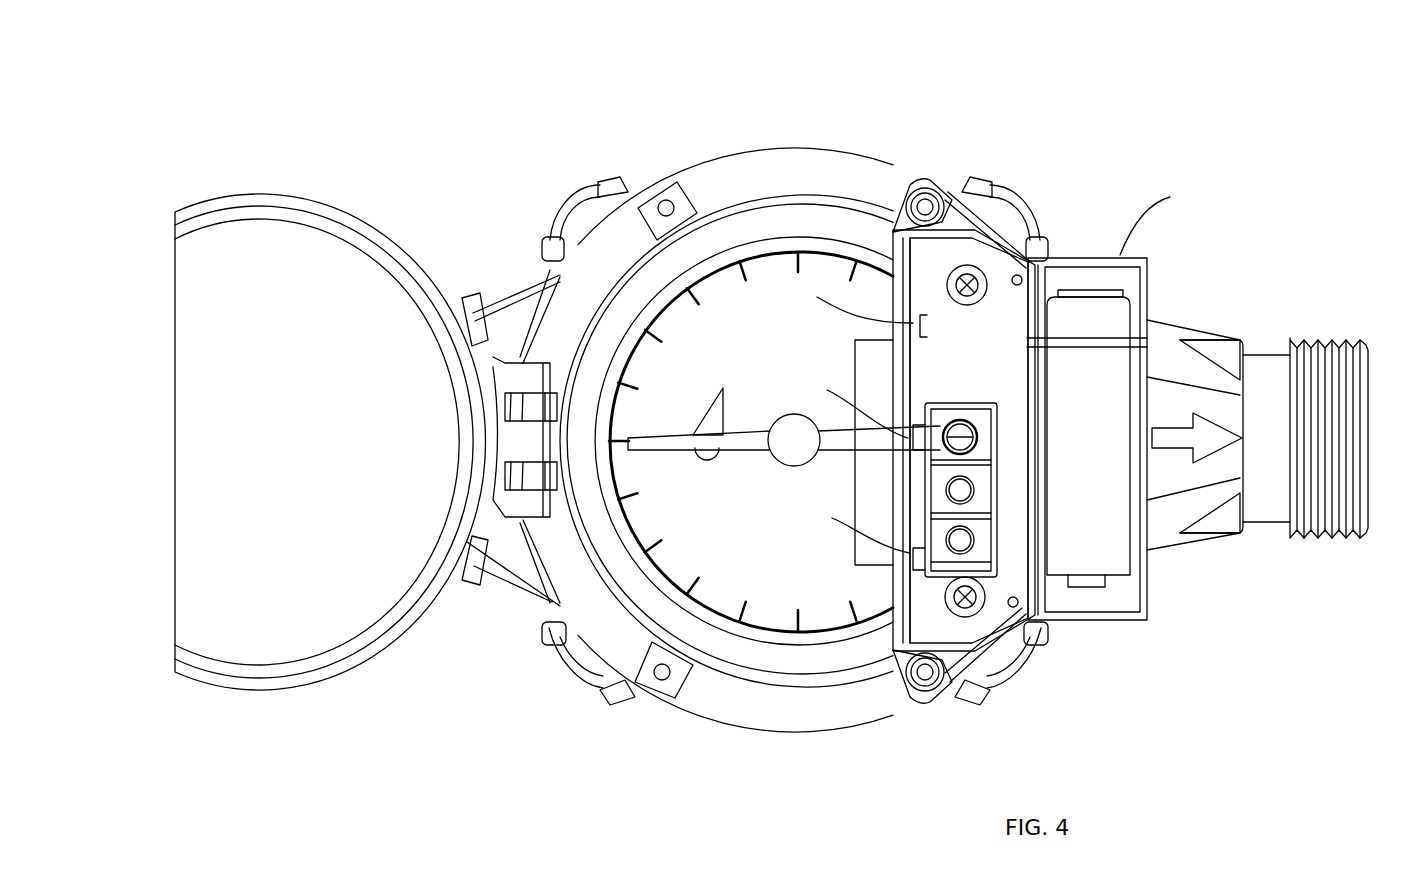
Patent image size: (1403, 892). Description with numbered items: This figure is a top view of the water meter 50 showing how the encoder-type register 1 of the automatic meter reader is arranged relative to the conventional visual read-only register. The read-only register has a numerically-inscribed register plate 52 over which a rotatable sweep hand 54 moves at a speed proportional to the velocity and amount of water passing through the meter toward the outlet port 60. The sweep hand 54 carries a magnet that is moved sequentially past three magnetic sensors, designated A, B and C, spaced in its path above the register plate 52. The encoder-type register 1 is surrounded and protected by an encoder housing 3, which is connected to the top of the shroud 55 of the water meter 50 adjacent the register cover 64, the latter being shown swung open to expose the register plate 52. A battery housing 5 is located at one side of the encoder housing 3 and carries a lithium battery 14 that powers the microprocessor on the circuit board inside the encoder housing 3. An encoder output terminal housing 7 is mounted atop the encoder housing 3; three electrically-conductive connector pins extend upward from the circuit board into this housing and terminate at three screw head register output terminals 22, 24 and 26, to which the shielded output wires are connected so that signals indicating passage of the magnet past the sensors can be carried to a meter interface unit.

The encoder-type register 1 is at (965, 386).
The encoder housing 3 is at (887, 590).
The battery housing 5 is at (1119, 380).
The encoder output terminal housing 7 is at (913, 470).
The battery 14 is at (1088, 310).
The register output terminal 22 is at (978, 437).
The register output terminal 24 is at (975, 490).
The register output terminal 26 is at (975, 540).
The water meter 50 is at (887, 138).
The register plate 52 is at (770, 282).
The sweep hand 54 is at (644, 437).
The shroud 55 is at (768, 730).
The outlet port 60 is at (1258, 353).
The register cover 64 is at (305, 643).